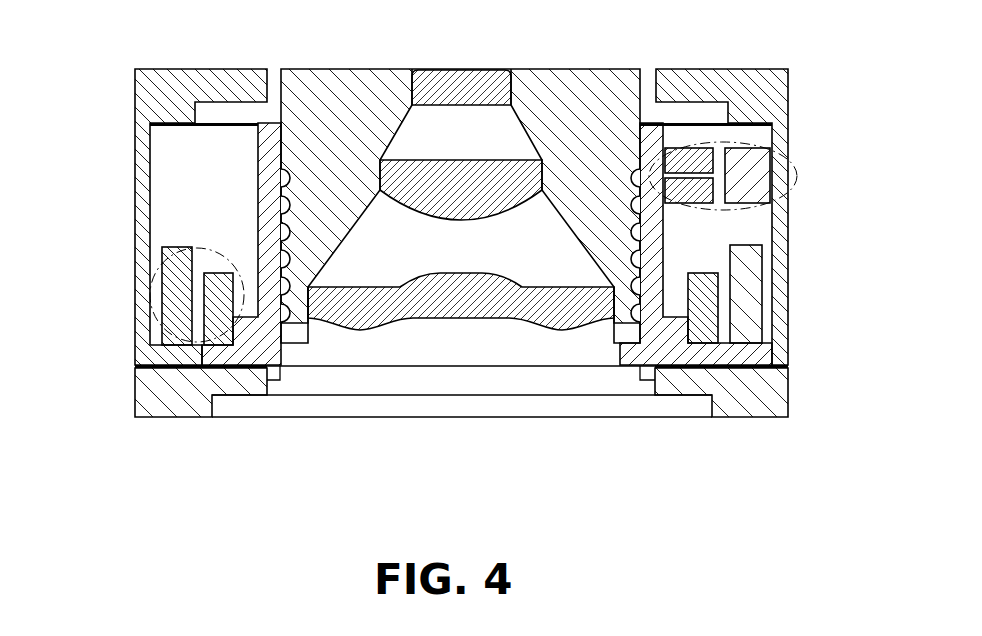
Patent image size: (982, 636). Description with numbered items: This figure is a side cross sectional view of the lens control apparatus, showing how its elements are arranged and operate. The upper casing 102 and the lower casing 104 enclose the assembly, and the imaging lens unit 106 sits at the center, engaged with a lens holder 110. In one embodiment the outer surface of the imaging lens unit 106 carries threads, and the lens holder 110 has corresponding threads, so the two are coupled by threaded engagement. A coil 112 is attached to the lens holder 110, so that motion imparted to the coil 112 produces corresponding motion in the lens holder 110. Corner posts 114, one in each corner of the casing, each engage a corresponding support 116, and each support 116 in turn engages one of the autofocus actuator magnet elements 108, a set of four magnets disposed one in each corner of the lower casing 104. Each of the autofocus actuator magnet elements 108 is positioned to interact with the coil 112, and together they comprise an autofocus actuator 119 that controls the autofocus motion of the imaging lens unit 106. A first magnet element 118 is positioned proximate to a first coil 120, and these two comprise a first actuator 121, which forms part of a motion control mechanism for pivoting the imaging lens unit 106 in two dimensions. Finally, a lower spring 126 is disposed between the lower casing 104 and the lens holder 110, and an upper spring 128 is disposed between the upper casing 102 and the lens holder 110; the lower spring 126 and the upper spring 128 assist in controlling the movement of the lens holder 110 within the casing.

The upper casing 102 is at (180, 77).
The lower casing 104 is at (523, 403).
The imaging lens unit 106 is at (566, 84).
The autofocus actuator magnet elements 108 is at (173, 280).
The lens holder 110 is at (267, 163).
The coil 112 is at (217, 313).
The corner posts 114 is at (180, 395).
The support 116 is at (157, 352).
The first magnet element 118 is at (747, 163).
The autofocus actuator 119 is at (140, 307).
The first coil 120 is at (697, 172).
The first actuator 121 is at (790, 192).
The lower spring 126 is at (733, 368).
The upper spring 128 is at (688, 118).